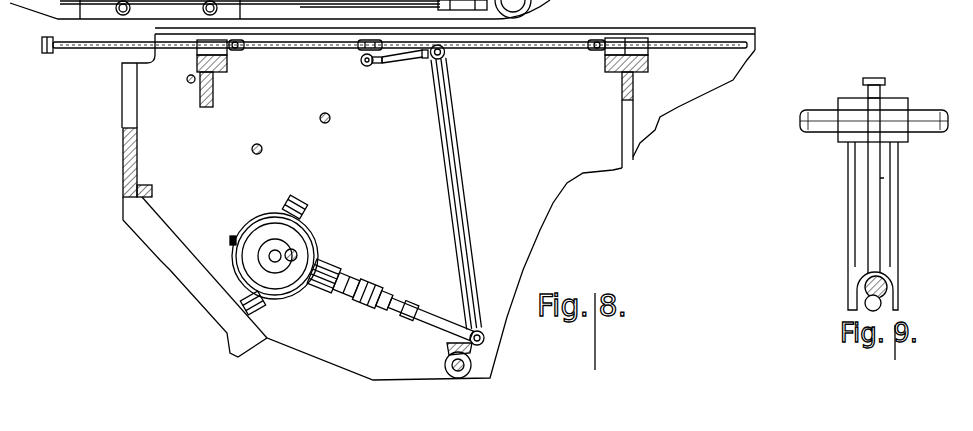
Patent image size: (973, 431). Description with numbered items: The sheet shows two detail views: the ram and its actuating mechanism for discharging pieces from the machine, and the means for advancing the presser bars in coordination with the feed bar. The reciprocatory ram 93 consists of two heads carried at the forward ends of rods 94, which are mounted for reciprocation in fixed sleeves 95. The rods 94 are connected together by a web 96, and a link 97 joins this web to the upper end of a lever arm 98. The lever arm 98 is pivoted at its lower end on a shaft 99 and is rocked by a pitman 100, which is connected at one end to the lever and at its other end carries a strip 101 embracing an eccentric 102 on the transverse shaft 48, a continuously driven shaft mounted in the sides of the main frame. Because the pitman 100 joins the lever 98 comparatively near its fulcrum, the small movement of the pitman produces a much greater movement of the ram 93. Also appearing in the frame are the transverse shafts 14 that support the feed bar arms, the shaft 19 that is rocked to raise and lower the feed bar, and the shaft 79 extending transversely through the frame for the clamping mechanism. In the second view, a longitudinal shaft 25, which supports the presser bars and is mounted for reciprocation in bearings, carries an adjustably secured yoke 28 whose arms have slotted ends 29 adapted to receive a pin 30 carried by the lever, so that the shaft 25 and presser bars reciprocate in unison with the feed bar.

In FIG. 8, the reciprocatory ram 93 is at (47, 53).
In FIG. 8, the rods 94 is at (293, 45).
In FIG. 8, the fixed sleeves 95 is at (200, 45).
In FIG. 8, the shaft 79 is at (189, 81).
In FIG. 8, the web 96 is at (362, 55).
In FIG. 8, the link 97 is at (407, 58).
In FIG. 8, the lever arm 98 is at (451, 108).
In FIG. 8, the transverse shafts 14 is at (322, 123).
In FIG. 8, the shaft 19 is at (252, 153).
In FIG. 8, the eccentric 102 is at (263, 232).
In FIG. 8, the strip 101 is at (290, 293).
In FIG. 8, the transverse shaft 48 is at (297, 251).
In FIG. 8, the pitman 100 is at (420, 307).
In FIG. 8, the shaft 99 is at (450, 362).
In FIG. 9, the longitudinal shaft 25 is at (818, 115).
In FIG. 9, the yoke 28 is at (862, 167).
In FIG. 9, the slotted ends 29 is at (865, 290).
In FIG. 9, the pin 30 is at (866, 307).